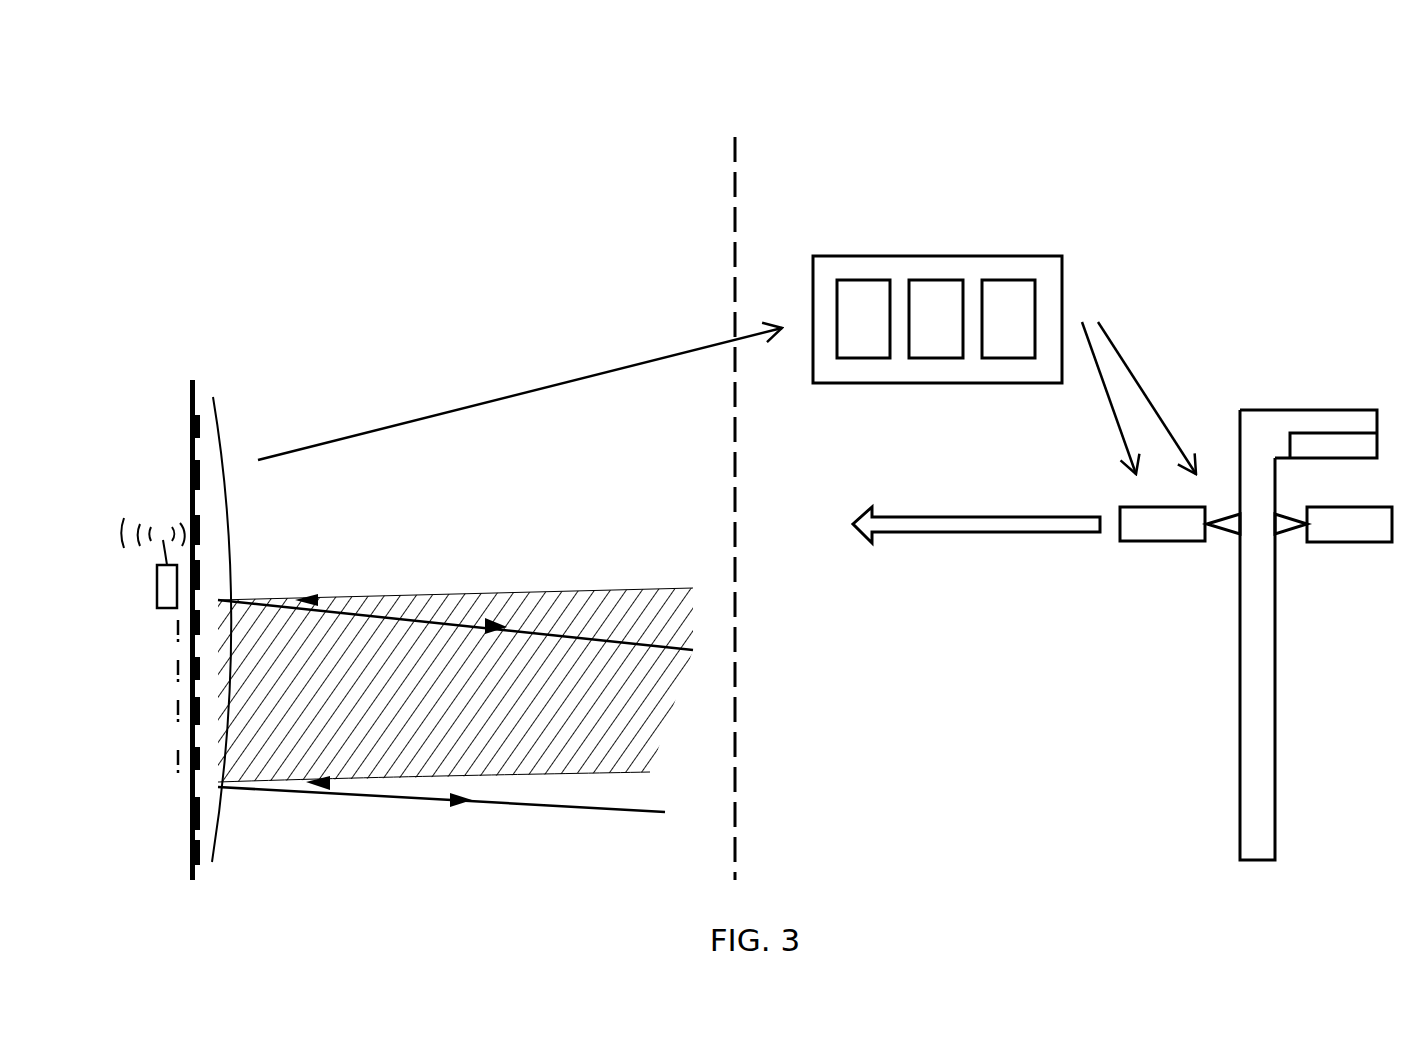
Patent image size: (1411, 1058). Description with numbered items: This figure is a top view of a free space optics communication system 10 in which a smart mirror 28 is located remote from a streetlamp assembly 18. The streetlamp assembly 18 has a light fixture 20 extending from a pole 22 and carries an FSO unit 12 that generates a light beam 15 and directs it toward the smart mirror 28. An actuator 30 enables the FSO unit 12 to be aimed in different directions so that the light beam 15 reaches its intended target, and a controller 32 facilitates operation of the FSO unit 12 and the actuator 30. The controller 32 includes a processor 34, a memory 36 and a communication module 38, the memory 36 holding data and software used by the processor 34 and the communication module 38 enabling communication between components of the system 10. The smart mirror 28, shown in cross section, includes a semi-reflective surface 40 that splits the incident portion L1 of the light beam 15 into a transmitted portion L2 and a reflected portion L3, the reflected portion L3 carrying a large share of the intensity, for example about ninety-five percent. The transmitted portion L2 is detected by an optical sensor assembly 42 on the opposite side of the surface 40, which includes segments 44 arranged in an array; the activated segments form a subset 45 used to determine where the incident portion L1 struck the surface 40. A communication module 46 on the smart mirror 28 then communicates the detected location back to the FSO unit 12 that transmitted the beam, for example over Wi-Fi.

The system 10 is at (136, 154).
The FSO unit 12 is at (1156, 537).
The light beam 15 is at (992, 533).
The streetlamp assembly 18 is at (1332, 186).
The light fixture 20 is at (1308, 418).
The pole 22 is at (1255, 752).
The smart mirror 28 is at (330, 372).
The actuator 30 is at (1228, 535).
The controller 32 is at (922, 373).
The processor 34 is at (858, 293).
The memory 36 is at (935, 295).
The communication module 38 is at (1010, 298).
The reflective surface 40 is at (222, 388).
The optical sensor assembly 42 is at (158, 394).
The segments 44 is at (191, 476).
The subset 45 is at (175, 757).
The communication module 46 is at (162, 580).
The incident portion L1 is at (628, 608).
The transmitted portion L2 is at (218, 598).
The reflected portion L3 is at (605, 815).